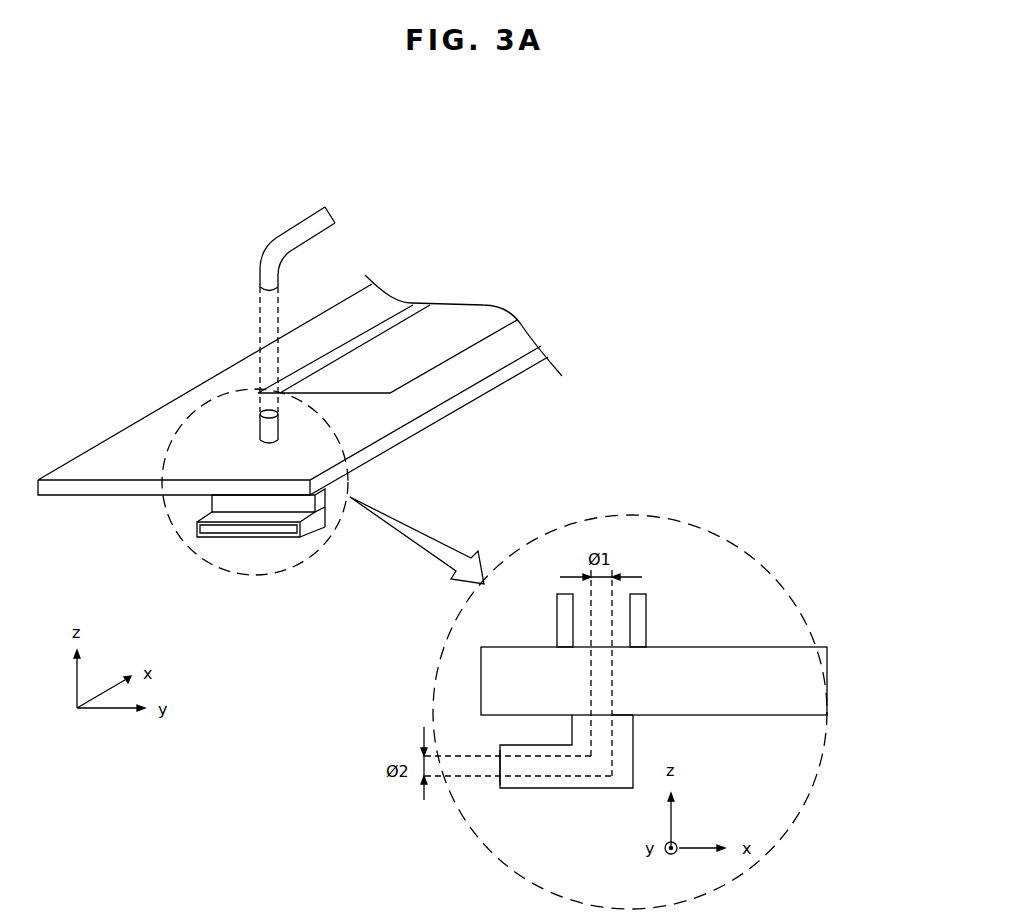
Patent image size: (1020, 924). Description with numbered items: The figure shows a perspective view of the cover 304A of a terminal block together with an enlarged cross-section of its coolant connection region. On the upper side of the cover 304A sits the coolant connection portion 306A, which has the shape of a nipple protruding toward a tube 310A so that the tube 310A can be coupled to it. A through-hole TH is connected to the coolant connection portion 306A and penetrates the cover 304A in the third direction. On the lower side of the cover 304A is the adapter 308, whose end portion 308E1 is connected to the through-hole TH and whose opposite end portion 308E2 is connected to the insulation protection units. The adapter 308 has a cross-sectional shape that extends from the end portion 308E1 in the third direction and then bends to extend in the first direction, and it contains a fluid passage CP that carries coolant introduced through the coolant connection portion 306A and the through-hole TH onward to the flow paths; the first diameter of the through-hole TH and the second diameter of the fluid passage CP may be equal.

The cover 304A is at (515, 343).
The coolant connection portion 306A is at (260, 425).
The adapter 308 is at (310, 522).
The end portion 308E1 is at (622, 716).
The opposite end portion 308E2 is at (500, 767).
The tube 310A is at (302, 230).
The through-hole TH is at (603, 693).
The fluid passage CP is at (600, 766).